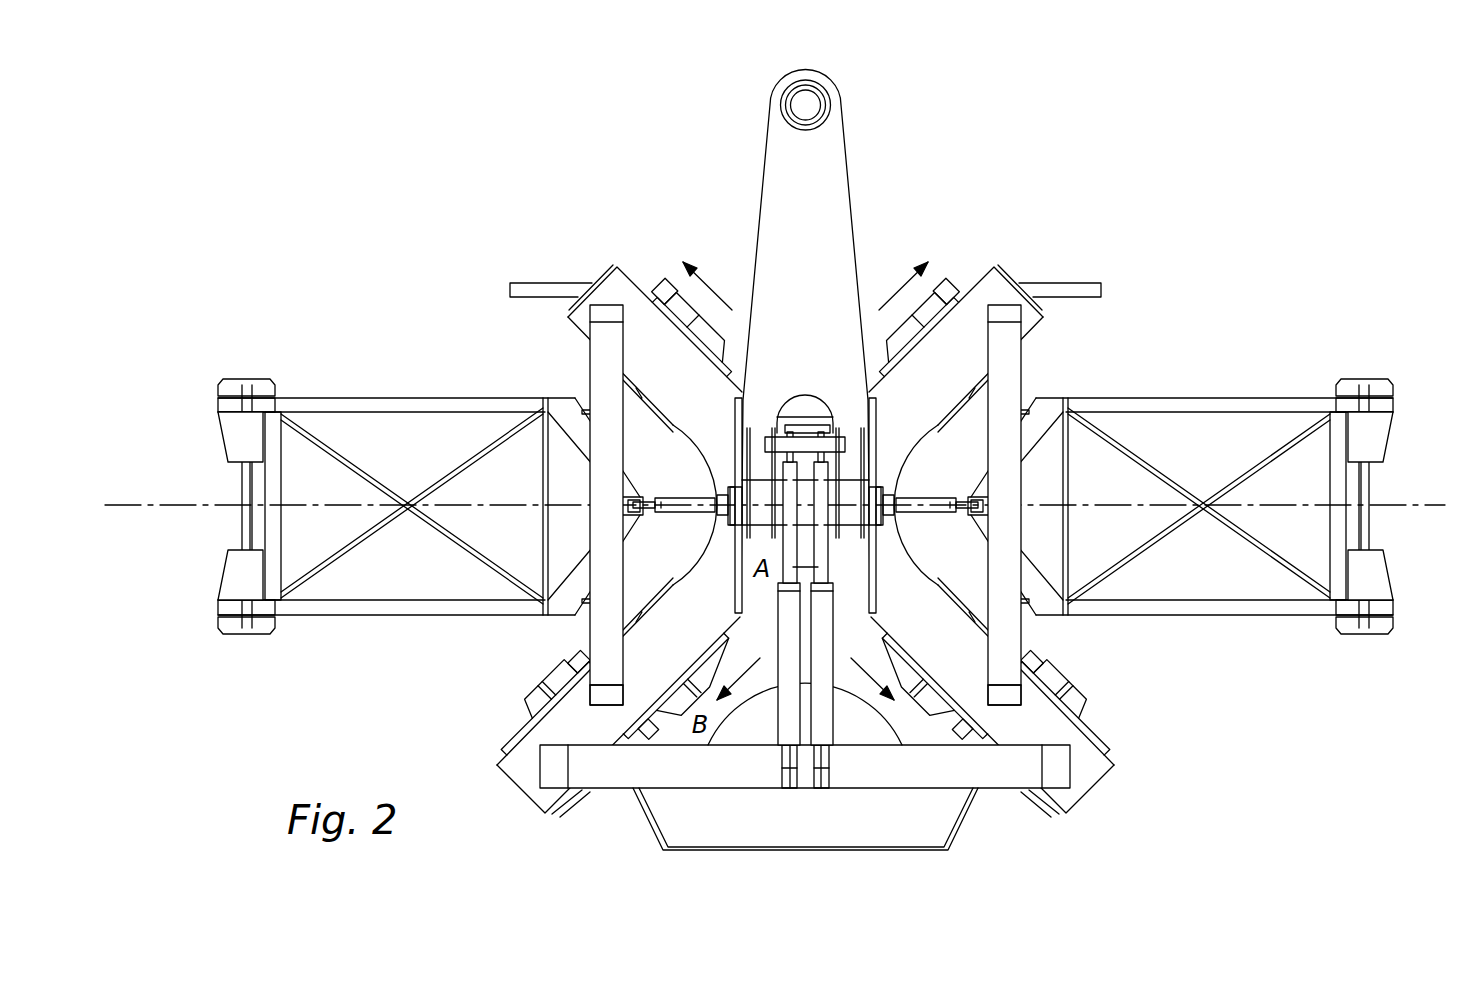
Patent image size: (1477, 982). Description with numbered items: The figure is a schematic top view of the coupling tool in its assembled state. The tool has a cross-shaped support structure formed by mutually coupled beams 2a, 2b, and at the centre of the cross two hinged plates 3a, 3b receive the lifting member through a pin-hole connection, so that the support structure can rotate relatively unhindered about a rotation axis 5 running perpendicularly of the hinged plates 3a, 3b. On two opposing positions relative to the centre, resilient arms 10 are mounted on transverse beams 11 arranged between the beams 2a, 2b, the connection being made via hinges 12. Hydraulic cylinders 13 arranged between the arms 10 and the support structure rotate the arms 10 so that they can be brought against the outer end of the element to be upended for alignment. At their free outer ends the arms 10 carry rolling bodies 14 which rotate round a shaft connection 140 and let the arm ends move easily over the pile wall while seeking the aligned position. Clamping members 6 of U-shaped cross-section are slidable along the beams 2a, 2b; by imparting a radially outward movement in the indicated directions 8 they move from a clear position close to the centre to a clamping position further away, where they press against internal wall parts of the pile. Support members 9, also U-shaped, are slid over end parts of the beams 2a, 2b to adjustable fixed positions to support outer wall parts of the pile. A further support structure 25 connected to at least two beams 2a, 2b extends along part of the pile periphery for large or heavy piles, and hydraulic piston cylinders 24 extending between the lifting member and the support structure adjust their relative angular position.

The beam 2a is at (1092, 770).
The beam 2b is at (1003, 288).
The hinged plate 3a is at (735, 412).
The hinged plate 3b is at (878, 582).
The rotation axis 5 is at (114, 505).
The clamping member 6 is at (805, 505).
The radially outward direction 8 is at (805, 483).
The support member 9 is at (805, 701).
The resilient arm 10 is at (805, 454).
The transverse beam 11 is at (805, 505).
The hinge 12 is at (805, 666).
The hydraulic cylinder 13 is at (805, 484).
The rolling body 14 is at (240, 440).
The shaft connection 140 is at (242, 404).
The hydraulic piston cylinder 24 is at (820, 650).
The support structure 25 is at (808, 820).